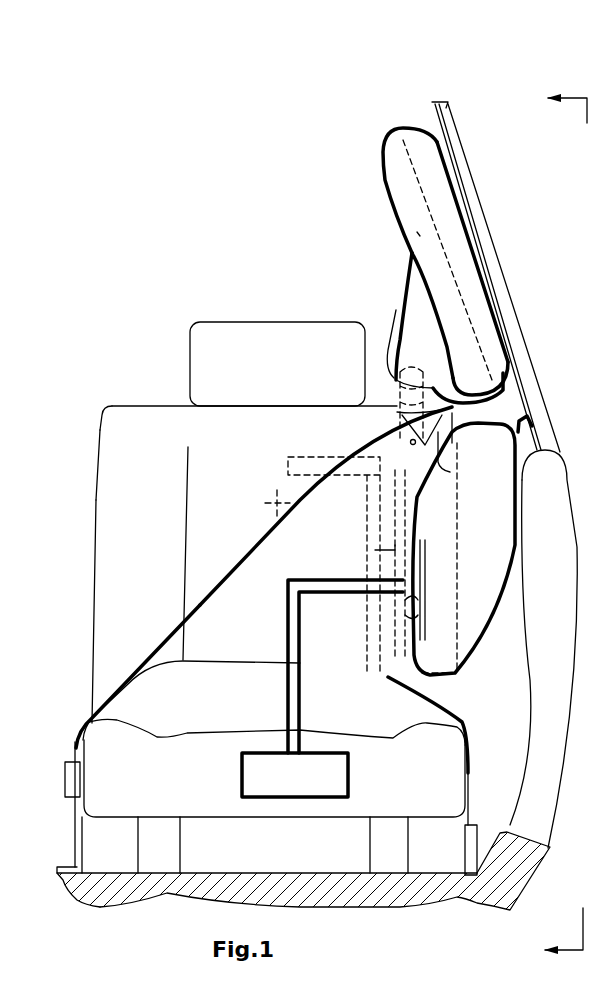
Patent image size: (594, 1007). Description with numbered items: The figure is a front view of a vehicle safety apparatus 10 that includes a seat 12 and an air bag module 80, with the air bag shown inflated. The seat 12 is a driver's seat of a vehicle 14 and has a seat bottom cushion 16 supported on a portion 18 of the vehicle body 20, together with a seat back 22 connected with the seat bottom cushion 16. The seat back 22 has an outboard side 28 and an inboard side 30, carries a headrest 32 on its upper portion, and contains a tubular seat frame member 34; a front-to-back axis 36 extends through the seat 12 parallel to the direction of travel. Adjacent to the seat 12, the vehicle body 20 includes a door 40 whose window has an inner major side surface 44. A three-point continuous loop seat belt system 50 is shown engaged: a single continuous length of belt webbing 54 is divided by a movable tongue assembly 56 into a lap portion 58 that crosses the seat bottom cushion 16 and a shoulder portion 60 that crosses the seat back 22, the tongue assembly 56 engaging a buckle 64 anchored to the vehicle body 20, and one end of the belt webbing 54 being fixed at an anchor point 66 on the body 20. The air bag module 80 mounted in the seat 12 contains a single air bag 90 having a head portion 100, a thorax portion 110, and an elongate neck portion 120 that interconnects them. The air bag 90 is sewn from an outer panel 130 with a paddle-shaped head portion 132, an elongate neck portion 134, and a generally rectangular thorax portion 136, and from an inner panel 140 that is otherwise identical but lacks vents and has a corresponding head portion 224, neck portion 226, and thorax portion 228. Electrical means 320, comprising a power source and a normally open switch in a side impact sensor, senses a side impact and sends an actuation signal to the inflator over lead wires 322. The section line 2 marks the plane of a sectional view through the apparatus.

The section line 2- 2 is at (553, 524).
The vehicle safety apparatus 10 is at (210, 268).
The seat 12 is at (100, 428).
The vehicle 14 is at (107, 905).
The seat bottom cushion 16 is at (427, 772).
The portion of the body 18 is at (167, 893).
The body 20 is at (218, 875).
The seat back 22 is at (110, 533).
The outboard side 28 is at (460, 678).
The inboard side 30 is at (92, 572).
The headrest 32 is at (193, 323).
The tubular seat frame member 34 is at (317, 457).
The front-to-back axis 36 is at (273, 497).
The door 40 is at (468, 152).
The inner major side surface 44 is at (420, 112).
The seat belt system 50 is at (165, 602).
The belt webbing 54 is at (147, 657).
The tongue assembly 56 is at (75, 752).
The lap portion 58 is at (130, 683).
The shoulder portion 60 is at (250, 562).
The buckle 64 is at (66, 780).
The anchor point 66 is at (480, 858).
The air bag module 80 is at (380, 272).
The air bag 90 is at (380, 150).
The head portion 100 is at (385, 183).
The thorax portion 110 is at (503, 531).
The neck portion 120 is at (468, 410).
The outer panel 130 is at (443, 200).
The head portion of the outer panel 132 is at (470, 265).
The neck portion of the outer panel 134 is at (457, 438).
The thorax portion of the outer panel 136 is at (477, 597).
The inner panel 140 is at (407, 196).
The head portion of the inner panel 224 is at (417, 232).
The neck portion of the inner panel 226 is at (379, 334).
The thorax portion of the inner panel 228 is at (433, 508).
The electrical means 320 is at (242, 768).
The lead wires 322 is at (285, 668).